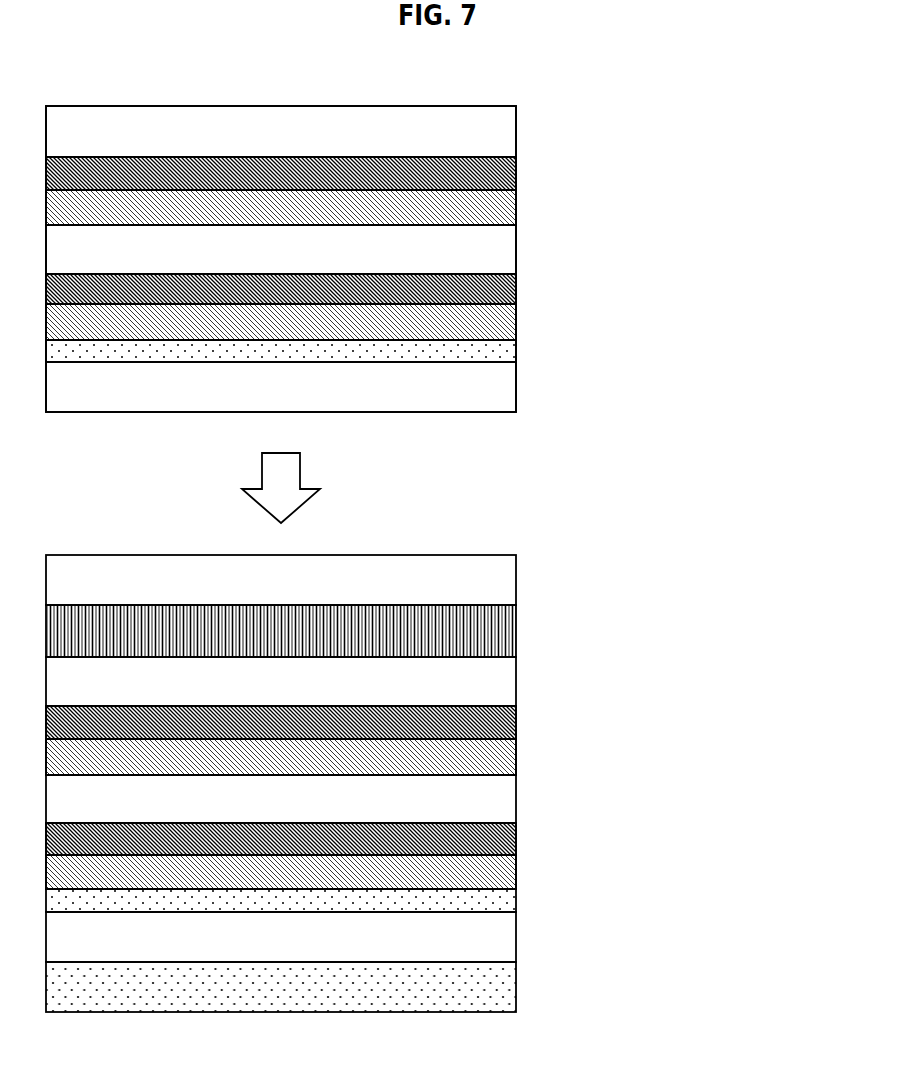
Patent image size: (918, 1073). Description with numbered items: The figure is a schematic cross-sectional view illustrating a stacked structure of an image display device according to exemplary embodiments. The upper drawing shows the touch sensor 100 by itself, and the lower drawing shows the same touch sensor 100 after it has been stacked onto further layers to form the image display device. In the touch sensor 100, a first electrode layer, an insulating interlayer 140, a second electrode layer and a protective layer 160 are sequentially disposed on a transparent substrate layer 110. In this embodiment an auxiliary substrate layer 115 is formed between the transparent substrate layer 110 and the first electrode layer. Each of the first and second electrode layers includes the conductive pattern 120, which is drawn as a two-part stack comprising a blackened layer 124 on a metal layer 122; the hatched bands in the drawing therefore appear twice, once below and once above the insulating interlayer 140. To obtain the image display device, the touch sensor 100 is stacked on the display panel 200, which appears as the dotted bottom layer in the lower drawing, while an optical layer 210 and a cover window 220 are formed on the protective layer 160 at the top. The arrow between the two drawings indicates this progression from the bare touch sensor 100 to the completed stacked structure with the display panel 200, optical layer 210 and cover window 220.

The touch sensor 100 is at (95, 87).
The transparent substrate layer 110 is at (500, 396).
The auxiliary substrate layer 115 is at (500, 354).
The conductive pattern 120 is at (658, 152).
The metal layer 122 is at (500, 204).
The blackened layer 124 is at (500, 171).
The insulating interlayer 140 is at (500, 249).
The protective layer 160 is at (500, 134).
The display panel 200 is at (500, 993).
The optical layer 210 is at (500, 633).
The cover window 220 is at (500, 583).